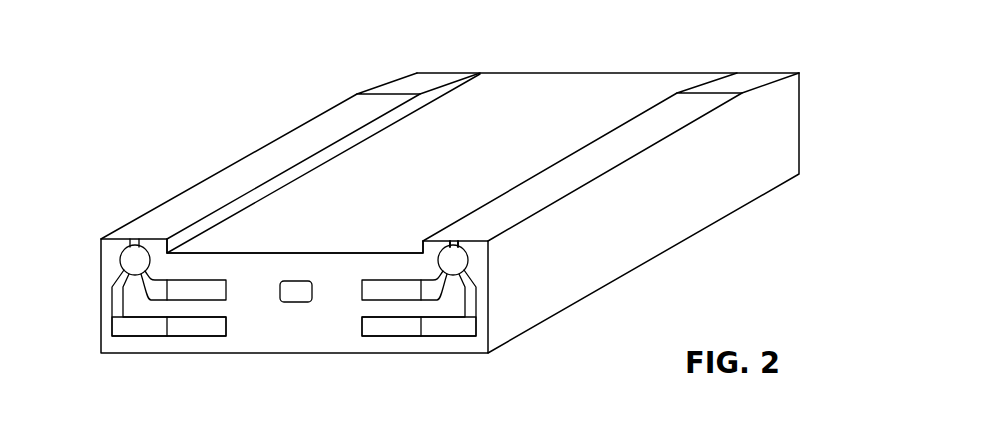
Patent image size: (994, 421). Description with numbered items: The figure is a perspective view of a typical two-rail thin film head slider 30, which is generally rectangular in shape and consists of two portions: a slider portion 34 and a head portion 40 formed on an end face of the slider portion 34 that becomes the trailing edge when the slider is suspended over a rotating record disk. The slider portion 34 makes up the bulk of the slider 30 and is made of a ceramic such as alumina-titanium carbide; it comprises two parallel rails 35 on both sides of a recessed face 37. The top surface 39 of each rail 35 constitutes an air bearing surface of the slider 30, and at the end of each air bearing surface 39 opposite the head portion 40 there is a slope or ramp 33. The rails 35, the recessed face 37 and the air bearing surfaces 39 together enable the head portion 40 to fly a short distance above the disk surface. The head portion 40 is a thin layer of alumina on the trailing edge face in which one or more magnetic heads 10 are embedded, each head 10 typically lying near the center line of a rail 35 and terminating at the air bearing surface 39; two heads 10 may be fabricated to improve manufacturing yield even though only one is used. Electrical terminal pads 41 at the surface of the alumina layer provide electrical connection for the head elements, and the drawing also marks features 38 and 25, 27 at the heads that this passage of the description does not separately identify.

The magnetic head 10 is at (123, 253).
The conductor 25 is at (460, 245).
The conductor 27 is at (454, 244).
The thin film head slider 30 is at (203, 140).
The slope or ramp 33 is at (428, 82).
The slider portion 34 is at (715, 207).
The rail 35 is at (317, 118).
The recessed face 37 is at (495, 141).
The pin 38 is at (133, 238).
The air bearing surface 39 is at (298, 134).
The head portion 40 is at (297, 253).
The electrical terminal pads 41 is at (213, 337).